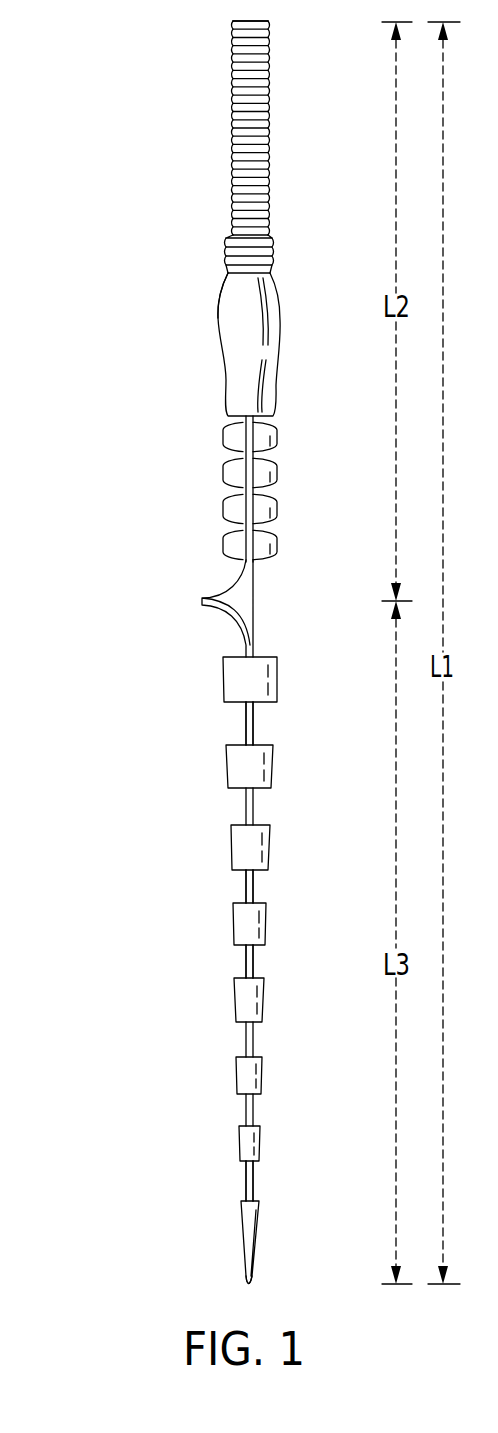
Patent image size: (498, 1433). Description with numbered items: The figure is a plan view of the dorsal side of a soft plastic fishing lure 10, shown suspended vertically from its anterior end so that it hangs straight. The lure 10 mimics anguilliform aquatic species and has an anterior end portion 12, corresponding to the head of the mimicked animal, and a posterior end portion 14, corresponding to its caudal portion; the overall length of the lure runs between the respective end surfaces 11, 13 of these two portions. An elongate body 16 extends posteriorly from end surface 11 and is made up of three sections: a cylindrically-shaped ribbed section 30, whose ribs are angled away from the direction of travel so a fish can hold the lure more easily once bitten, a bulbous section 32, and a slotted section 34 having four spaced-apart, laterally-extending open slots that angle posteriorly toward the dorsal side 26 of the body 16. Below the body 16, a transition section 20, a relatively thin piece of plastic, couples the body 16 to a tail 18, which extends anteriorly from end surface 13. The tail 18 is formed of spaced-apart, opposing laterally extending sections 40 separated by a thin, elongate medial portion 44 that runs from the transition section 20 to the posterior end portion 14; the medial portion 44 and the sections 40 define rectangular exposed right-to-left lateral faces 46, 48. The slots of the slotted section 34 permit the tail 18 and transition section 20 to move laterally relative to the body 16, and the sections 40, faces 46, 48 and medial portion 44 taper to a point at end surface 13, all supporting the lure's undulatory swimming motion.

The soft plastic fishing lure 10 is at (127, 191).
The end surface 11 is at (242, 22).
The anterior end portion 12 is at (287, 143).
The end surface 13 is at (247, 1283).
The posterior end portion 14 is at (265, 1277).
The elongate body 16 is at (259, 411).
The tail 18 is at (247, 926).
The transition section 20 is at (276, 601).
The dorsal side 26 is at (245, 369).
The ribbed section 30 is at (270, 155).
The bulbous section 32 is at (218, 310).
The slotted section 34 is at (225, 478).
The laterally extending sections 40 is at (232, 677).
The elongate medial portion 44 is at (247, 724).
The lateral face 46 is at (248, 966).
The lateral face 48 is at (254, 966).